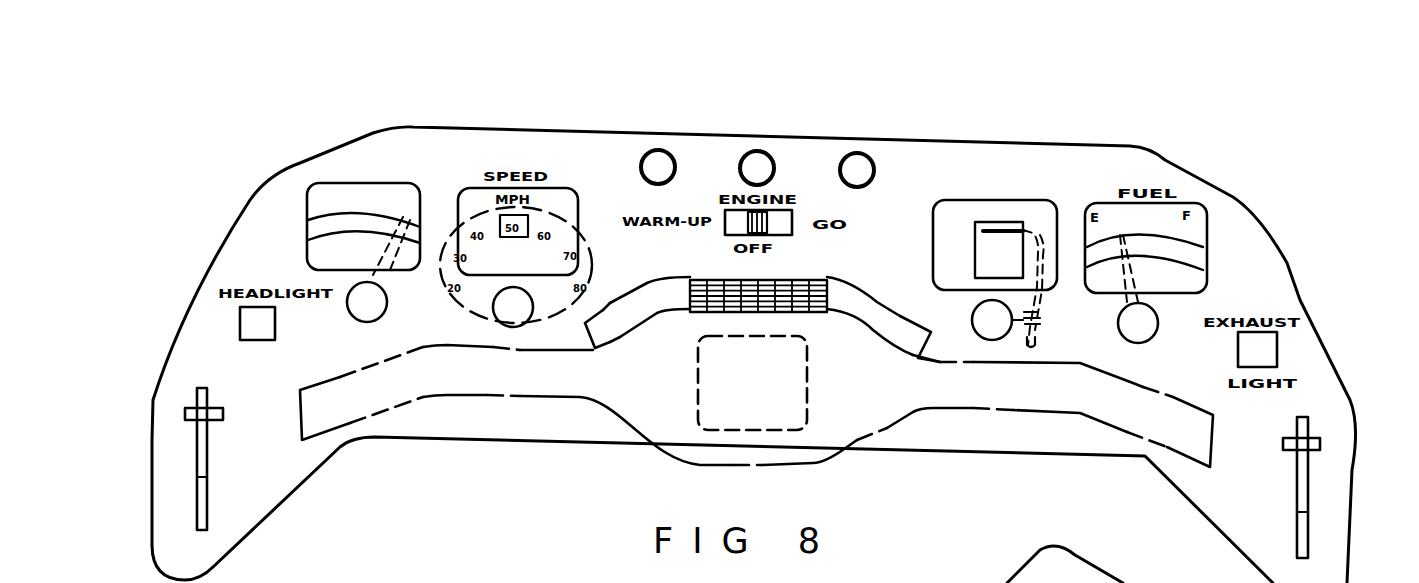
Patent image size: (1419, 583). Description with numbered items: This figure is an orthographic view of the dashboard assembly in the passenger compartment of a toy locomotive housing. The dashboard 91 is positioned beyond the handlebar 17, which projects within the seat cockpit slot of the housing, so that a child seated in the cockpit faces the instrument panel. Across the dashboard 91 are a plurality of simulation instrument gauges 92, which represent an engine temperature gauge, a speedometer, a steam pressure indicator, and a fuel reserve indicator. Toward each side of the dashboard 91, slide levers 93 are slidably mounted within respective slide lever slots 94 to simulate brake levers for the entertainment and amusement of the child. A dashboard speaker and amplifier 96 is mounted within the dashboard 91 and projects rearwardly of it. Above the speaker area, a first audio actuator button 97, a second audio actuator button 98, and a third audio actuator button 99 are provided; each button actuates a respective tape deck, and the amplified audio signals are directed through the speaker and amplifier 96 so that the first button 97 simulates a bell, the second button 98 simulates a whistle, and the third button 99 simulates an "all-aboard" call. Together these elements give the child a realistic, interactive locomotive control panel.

The handlebar 17 is at (413, 405).
The dashboard 91 is at (547, 440).
The simulation instrument gauges 92 is at (417, 183).
The slide levers 93 is at (185, 415).
The slide lever slots 94 is at (197, 478).
The dashboard speaker and amplifier 96 is at (813, 280).
The first audio actuator button 97 is at (678, 168).
The second audio actuator button 98 is at (776, 170).
The third audio actuator button 99 is at (876, 172).